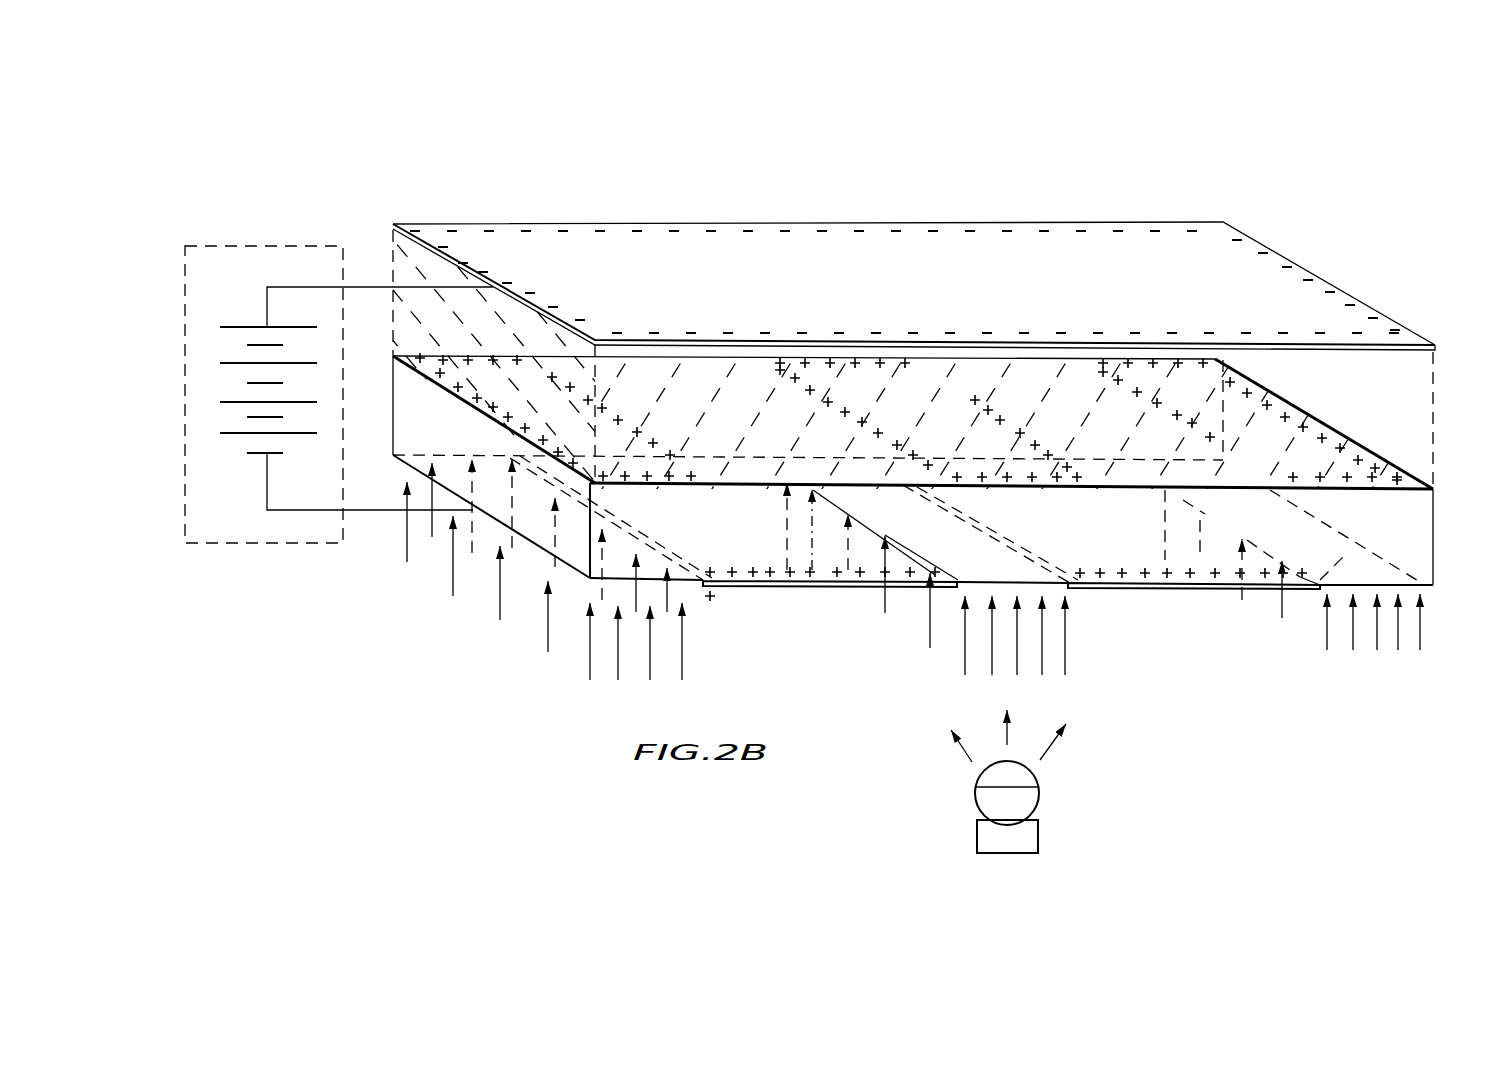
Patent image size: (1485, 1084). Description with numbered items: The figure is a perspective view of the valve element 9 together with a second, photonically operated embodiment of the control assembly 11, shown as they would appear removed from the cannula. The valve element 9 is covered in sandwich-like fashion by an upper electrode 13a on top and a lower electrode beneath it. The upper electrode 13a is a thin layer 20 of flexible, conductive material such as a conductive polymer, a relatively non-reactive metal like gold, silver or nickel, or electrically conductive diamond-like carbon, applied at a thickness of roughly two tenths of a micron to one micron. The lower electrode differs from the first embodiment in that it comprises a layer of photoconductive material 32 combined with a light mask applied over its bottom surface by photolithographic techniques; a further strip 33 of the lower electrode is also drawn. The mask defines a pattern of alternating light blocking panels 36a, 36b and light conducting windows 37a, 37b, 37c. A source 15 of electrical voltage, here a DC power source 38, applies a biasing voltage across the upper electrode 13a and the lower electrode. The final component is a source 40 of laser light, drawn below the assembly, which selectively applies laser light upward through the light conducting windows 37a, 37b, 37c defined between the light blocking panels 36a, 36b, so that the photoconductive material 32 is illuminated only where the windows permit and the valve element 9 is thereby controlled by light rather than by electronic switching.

The control assembly 11 is at (365, 150).
The upper electrode 13a is at (512, 210).
The layer of conductive material 20 is at (836, 250).
The valve element 9 is at (1412, 422).
The source of electrical voltage 15 is at (298, 243).
The DC power source 38 is at (243, 327).
The photoconductive material 32 is at (732, 545).
The second bottom electrode strip 33 is at (858, 592).
The light blocking panel 36a is at (862, 520).
The light blocking panel 36b is at (1203, 522).
The light conducting window 37a is at (540, 510).
The light conducting window 37b is at (1040, 583).
The light conducting window 37c is at (1318, 587).
The source of laser light 40 is at (1040, 832).